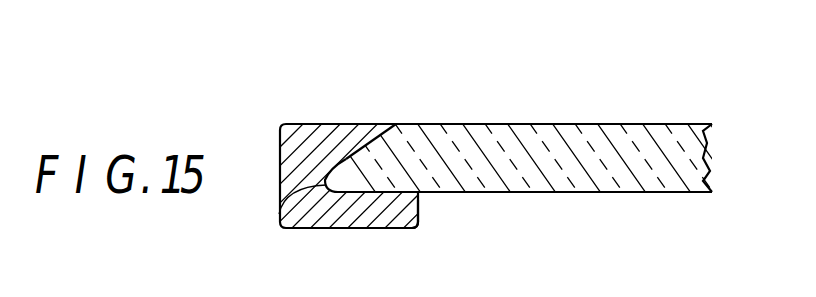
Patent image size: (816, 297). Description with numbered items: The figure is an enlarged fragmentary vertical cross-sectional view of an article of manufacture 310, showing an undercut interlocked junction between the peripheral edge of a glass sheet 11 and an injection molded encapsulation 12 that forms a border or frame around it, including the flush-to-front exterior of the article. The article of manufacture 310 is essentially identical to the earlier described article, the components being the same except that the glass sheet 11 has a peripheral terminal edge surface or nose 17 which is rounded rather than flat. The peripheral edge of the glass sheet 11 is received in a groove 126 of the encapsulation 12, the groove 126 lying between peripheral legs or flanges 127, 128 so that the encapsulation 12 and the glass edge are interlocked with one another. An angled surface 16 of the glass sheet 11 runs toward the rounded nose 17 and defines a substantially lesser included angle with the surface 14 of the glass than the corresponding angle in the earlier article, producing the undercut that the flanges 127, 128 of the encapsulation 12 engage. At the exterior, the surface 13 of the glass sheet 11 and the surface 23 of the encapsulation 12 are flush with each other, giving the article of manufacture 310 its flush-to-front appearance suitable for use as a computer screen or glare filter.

The article of manufacture 310 is at (593, 102).
The glass sheet 11 is at (549, 177).
The encapsulation 12 is at (297, 126).
The surface of the glass 13 is at (490, 122).
The surface of the glass 14 is at (502, 193).
The angled surface 16 is at (352, 152).
The peripheral terminal edge surface or nose 17 is at (279, 214).
The surface of the encapsulation 23 is at (325, 123).
The groove 126 is at (350, 180).
The peripheral leg or flange 127 is at (349, 169).
The peripheral leg or flange 128 is at (403, 218).